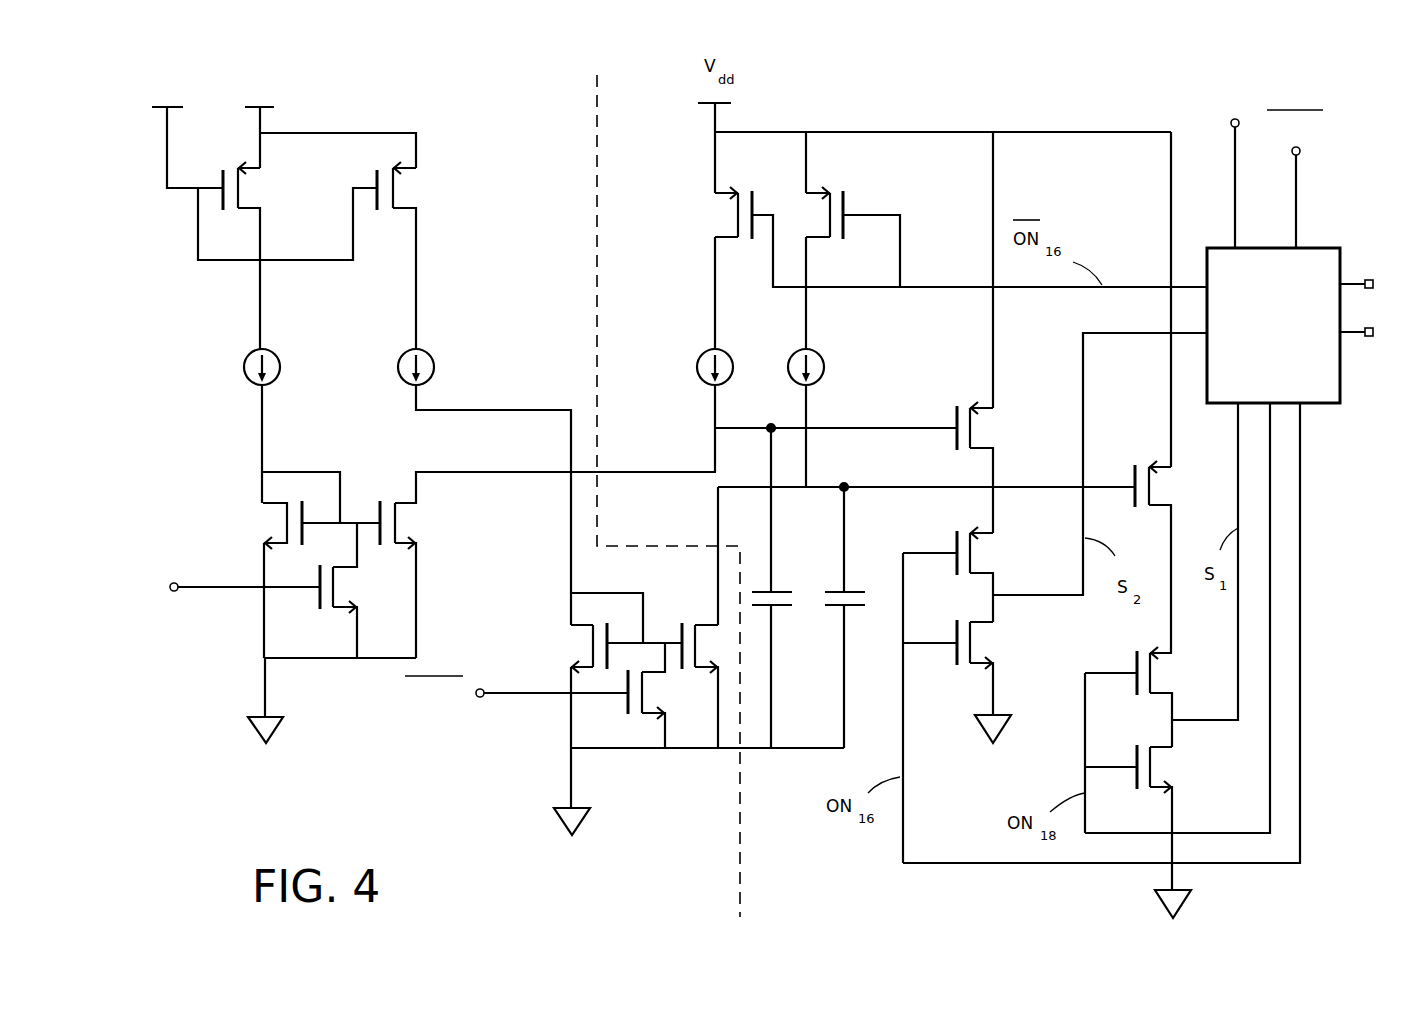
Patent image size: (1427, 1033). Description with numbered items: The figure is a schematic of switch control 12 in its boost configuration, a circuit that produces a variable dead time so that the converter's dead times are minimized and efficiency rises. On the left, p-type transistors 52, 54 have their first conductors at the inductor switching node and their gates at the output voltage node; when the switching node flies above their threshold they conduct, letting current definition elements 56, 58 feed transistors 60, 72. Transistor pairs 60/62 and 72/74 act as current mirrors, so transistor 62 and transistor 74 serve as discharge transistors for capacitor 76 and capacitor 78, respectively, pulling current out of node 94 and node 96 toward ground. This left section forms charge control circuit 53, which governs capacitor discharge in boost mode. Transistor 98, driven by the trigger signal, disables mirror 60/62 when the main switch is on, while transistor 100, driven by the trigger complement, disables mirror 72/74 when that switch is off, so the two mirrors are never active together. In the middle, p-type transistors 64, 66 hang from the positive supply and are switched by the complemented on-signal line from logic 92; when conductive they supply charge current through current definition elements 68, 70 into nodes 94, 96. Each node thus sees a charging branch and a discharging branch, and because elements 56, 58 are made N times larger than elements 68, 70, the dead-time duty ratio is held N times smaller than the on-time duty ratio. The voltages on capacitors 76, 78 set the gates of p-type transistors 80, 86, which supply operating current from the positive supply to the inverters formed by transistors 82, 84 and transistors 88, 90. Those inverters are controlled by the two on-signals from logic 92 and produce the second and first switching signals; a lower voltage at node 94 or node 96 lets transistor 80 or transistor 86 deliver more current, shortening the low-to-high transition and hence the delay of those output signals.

The switch control 12 is at (345, 789).
The transistor 52 is at (253, 207).
The charge control circuit 53 is at (508, 109).
The transistor 54 is at (404, 207).
The current definition element 56 is at (281, 368).
The current definition element 58 is at (435, 368).
The transistor 60 is at (285, 506).
The transistor 62 is at (408, 504).
The transistor 64 is at (727, 233).
The transistor 66 is at (818, 232).
The current definition element 68 is at (697, 364).
The current definition element 70 is at (826, 364).
The transistor 72 is at (591, 627).
The transistor 74 is at (703, 622).
The capacitor 76 is at (782, 590).
The capacitor 78 is at (853, 590).
The transistor 80 is at (985, 446).
The transistor 82 is at (985, 571).
The transistor 84 is at (985, 624).
The transistor 86 is at (1165, 503).
The transistor 88 is at (1163, 692).
The transistor 90 is at (1167, 750).
The logic 92 is at (1313, 247).
The node 94 is at (773, 424).
The node 96 is at (848, 481).
The transistor 98 is at (348, 568).
The transistor 100 is at (655, 674).